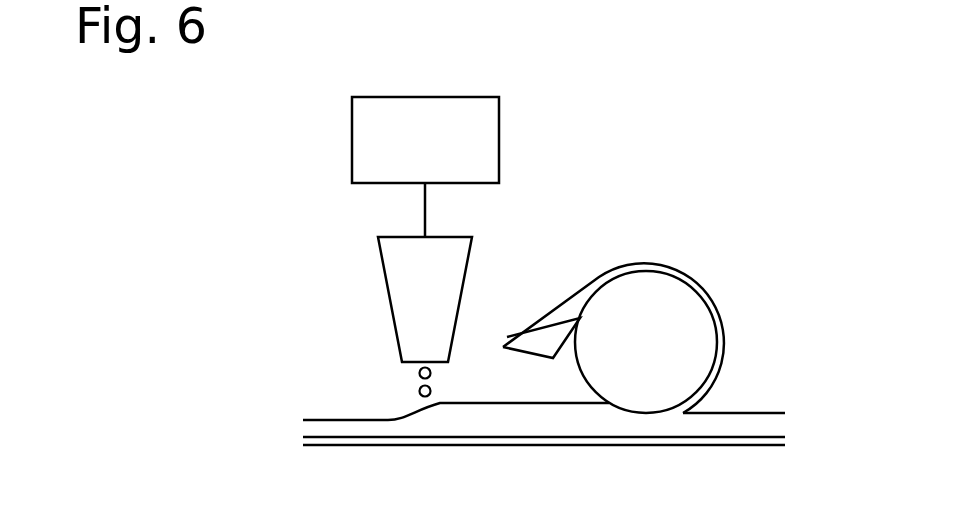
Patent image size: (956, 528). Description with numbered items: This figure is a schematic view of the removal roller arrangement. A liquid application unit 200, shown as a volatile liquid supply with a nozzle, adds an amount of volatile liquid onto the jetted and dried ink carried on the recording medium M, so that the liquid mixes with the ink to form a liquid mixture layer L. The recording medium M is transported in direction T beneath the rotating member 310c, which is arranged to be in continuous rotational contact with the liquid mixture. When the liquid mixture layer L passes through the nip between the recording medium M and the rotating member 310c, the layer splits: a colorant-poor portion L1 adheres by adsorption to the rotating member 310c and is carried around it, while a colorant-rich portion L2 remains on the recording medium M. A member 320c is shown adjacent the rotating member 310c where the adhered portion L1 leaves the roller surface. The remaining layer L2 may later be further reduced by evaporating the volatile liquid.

The liquid application unit 200 is at (348, 283).
The rotating member 310c is at (660, 237).
The blade 320c is at (552, 343).
The colorant-poor portion L1 is at (723, 329).
The colorant-rich portion L2 is at (738, 428).
The liquid mixture layer L is at (477, 414).
The recording medium M is at (346, 442).
The transport direction T is at (588, 497).